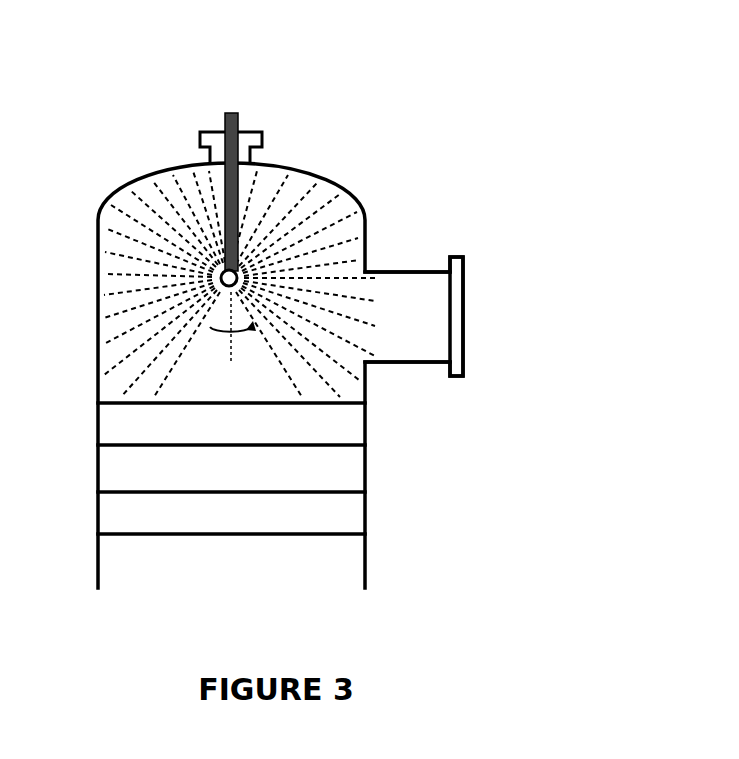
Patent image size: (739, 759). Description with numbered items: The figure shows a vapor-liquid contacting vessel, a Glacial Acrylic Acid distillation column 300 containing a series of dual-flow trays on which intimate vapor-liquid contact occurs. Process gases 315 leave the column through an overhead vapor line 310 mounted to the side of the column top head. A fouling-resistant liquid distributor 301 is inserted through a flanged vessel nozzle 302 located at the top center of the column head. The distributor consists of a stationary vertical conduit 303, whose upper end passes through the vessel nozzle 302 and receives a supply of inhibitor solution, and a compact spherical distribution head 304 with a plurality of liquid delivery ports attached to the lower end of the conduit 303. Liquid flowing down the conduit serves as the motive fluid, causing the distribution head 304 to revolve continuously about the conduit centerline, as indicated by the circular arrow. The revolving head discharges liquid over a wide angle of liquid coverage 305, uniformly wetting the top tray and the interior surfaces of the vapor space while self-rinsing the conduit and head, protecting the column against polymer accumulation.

The distillation column 300 is at (388, 455).
The liquid distributor 301 is at (231, 100).
The vessel nozzle 302 is at (255, 150).
The conduit 303 is at (235, 205).
The distribution head 304 is at (241, 276).
The angle of liquid coverage 305 is at (130, 208).
The overhead vapor line 310 is at (437, 290).
The process gases 315 is at (470, 318).